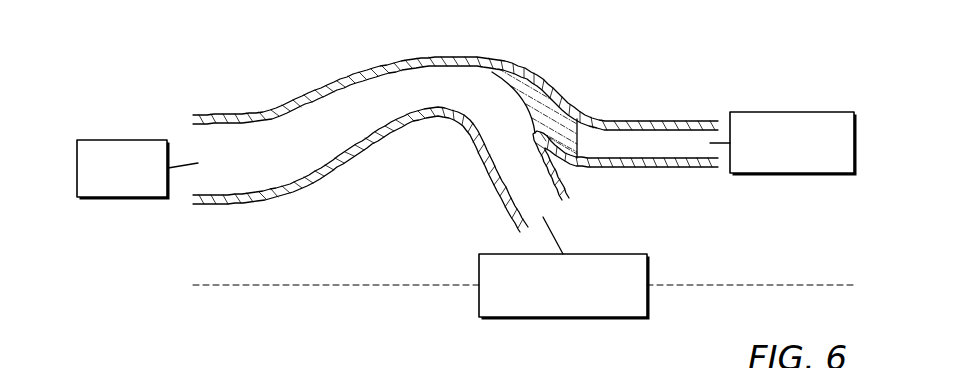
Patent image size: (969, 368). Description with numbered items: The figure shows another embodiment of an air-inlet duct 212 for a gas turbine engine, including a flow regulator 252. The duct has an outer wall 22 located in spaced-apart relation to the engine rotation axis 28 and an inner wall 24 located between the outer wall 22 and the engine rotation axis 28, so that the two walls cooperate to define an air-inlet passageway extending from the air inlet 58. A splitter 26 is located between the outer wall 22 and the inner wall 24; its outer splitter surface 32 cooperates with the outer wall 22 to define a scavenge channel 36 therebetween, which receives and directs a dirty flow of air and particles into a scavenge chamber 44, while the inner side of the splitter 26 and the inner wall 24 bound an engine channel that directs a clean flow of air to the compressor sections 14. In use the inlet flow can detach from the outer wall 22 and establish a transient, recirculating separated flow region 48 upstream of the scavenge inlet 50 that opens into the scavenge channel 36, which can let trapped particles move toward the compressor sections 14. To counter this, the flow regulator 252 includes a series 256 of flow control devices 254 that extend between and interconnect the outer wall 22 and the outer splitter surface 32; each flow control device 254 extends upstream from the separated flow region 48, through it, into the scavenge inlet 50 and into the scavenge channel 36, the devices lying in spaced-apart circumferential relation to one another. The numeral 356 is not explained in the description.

The compressor sections 14 is at (600, 318).
The outer wall 22 is at (283, 103).
The inner wall 24 is at (308, 183).
The splitter 26 is at (566, 168).
The engine rotation axis 28 is at (767, 287).
The outer splitter surface 32 is at (648, 160).
The scavenge channel 36 is at (628, 148).
The scavenge chamber 44 is at (793, 174).
The separated flow region 48 is at (540, 106).
The scavenge inlet 50 is at (540, 121).
The air inlet 58 is at (122, 198).
The air-inlet duct 212 is at (681, 72).
The flow regulator 252 is at (527, 58).
The flow control device 254 is at (552, 110).
The series of flow control devices 256 is at (510, 60).
The duct portion 356 is at (532, 362).